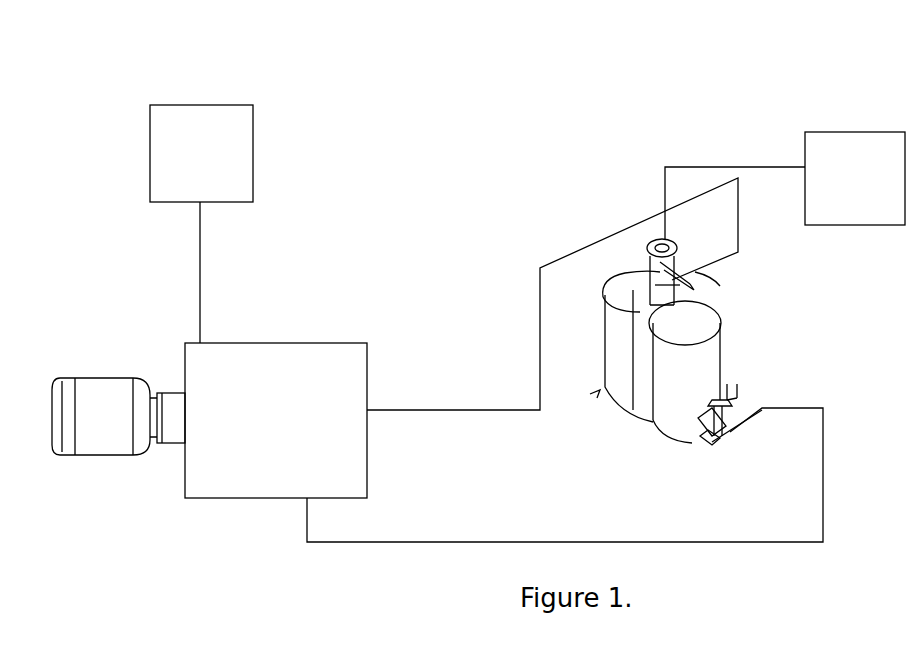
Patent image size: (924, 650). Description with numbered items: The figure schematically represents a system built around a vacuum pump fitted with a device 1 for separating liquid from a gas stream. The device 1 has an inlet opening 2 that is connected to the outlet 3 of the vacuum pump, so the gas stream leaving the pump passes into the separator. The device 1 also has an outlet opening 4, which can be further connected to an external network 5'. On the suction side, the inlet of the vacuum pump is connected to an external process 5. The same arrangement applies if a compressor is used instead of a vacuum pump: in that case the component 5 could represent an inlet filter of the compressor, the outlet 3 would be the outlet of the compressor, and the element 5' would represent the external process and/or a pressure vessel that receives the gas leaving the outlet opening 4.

The device for separating liquid from a gas stream 1 is at (663, 272).
The inlet opening 2 is at (720, 286).
The outlet of a vacuum pump 3 is at (372, 397).
The outlet opening 4 is at (620, 267).
The external process 5 is at (240, 147).
The external network 5' is at (855, 123).